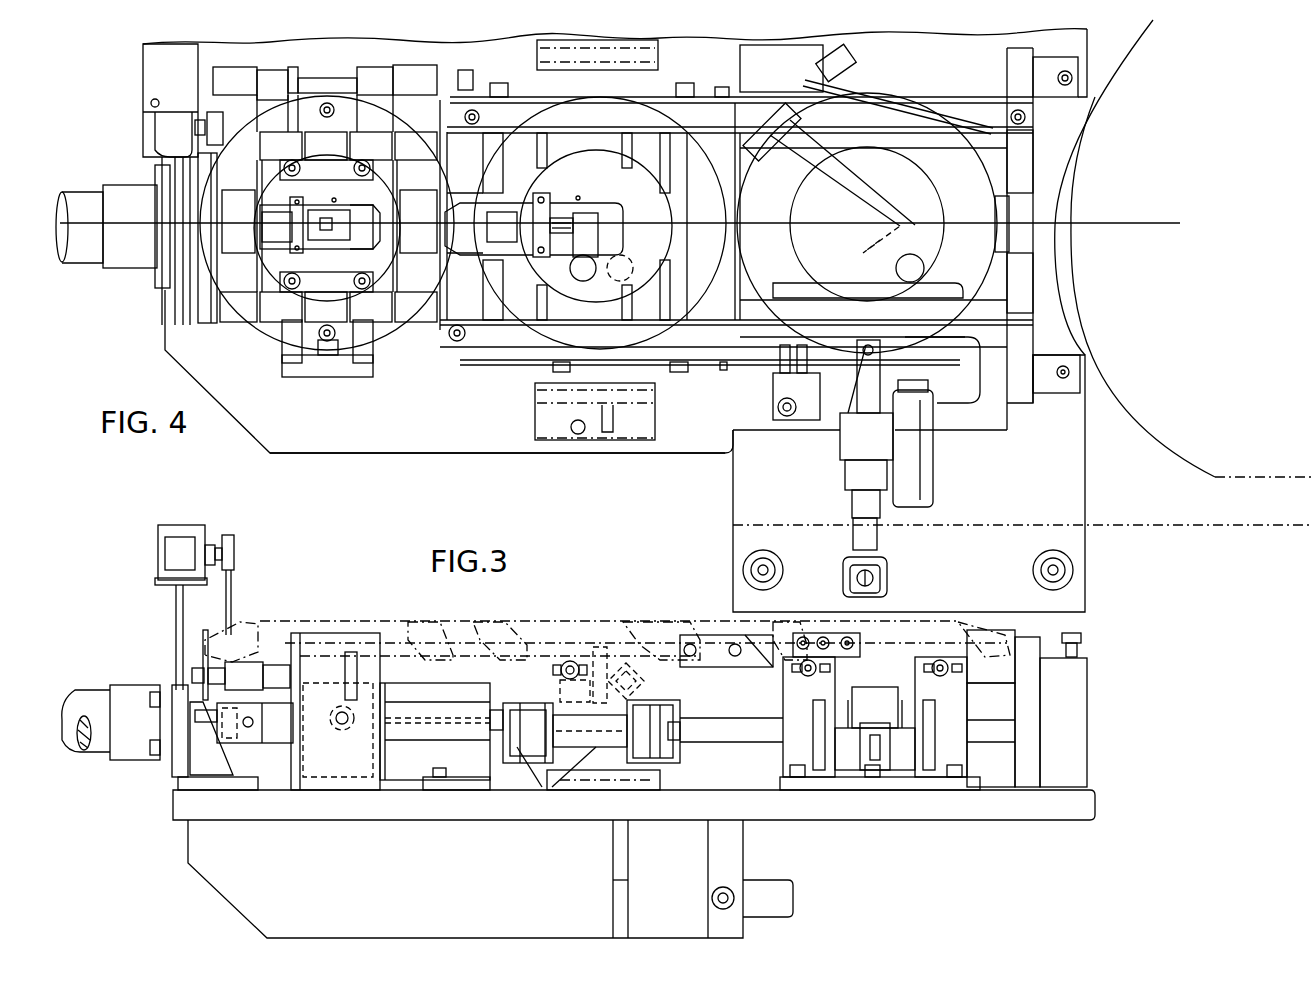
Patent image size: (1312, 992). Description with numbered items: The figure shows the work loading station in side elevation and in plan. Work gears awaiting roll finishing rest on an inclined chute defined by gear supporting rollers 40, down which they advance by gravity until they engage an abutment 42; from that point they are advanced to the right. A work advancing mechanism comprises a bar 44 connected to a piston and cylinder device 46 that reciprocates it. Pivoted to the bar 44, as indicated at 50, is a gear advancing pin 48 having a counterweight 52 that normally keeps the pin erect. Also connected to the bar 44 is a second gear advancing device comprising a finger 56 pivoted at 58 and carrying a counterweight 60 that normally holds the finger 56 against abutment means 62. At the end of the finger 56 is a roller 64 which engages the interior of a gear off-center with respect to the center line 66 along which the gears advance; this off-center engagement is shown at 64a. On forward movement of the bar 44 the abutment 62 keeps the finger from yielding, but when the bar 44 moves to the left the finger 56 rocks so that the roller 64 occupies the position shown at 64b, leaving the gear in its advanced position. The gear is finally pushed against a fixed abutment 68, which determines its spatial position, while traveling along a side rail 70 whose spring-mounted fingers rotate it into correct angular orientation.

In FIG. 4, the gear supporting rollers 40 is at (233, 77).
In FIG. 3, the gear supporting rollers 40 is at (240, 668).
In FIG. 4, the abutment 42 is at (343, 354).
In FIG. 3, the bar 44 is at (397, 733).
In FIG. 3, the piston and cylinder device 46 is at (90, 700).
In FIG. 3, the gear advancing pin 48 is at (368, 633).
In FIG. 3, the pivot 50 is at (334, 731).
In FIG. 3, the counterweight 52 is at (282, 750).
In FIG. 3, the finger 56 is at (640, 624).
In FIG. 3, the pivot 58 is at (590, 746).
In FIG. 3, the counterweight 60 is at (531, 790).
In FIG. 4, the abutment means 62 is at (557, 217).
In FIG. 3, the abutment means 62 is at (558, 672).
In FIG. 4, the roller 64 is at (578, 270).
In FIG. 3, the roller 64 is at (597, 632).
In FIG. 4, the off-center roller position 64a is at (896, 267).
In FIG. 4, the retracted roller position 64b is at (647, 252).
In FIG. 3, the retracted roller position 64b is at (648, 681).
In FIG. 4, the center line 66 is at (768, 222).
In FIG. 4, the fixed abutment 68 is at (993, 213).
In FIG. 4, the side rail 70 is at (437, 366).